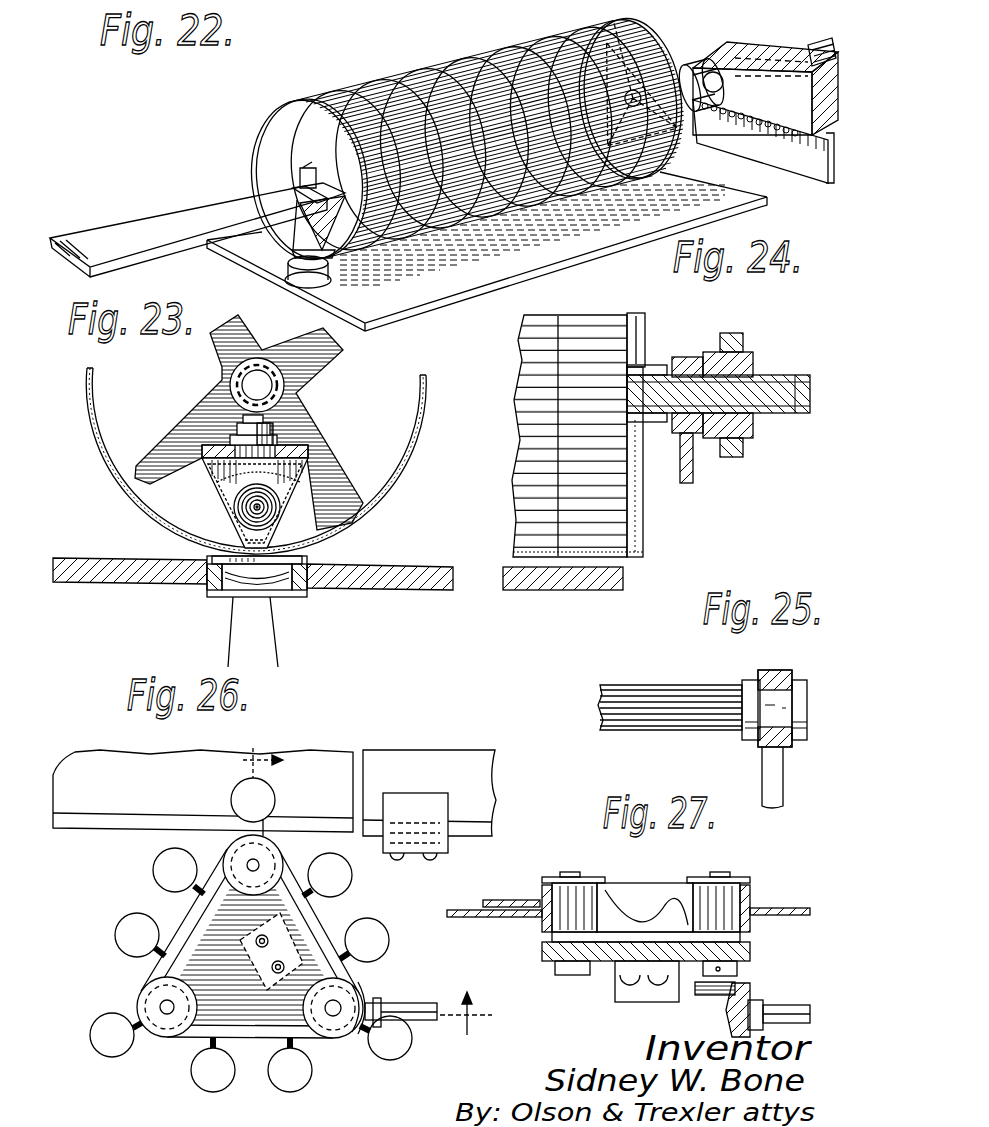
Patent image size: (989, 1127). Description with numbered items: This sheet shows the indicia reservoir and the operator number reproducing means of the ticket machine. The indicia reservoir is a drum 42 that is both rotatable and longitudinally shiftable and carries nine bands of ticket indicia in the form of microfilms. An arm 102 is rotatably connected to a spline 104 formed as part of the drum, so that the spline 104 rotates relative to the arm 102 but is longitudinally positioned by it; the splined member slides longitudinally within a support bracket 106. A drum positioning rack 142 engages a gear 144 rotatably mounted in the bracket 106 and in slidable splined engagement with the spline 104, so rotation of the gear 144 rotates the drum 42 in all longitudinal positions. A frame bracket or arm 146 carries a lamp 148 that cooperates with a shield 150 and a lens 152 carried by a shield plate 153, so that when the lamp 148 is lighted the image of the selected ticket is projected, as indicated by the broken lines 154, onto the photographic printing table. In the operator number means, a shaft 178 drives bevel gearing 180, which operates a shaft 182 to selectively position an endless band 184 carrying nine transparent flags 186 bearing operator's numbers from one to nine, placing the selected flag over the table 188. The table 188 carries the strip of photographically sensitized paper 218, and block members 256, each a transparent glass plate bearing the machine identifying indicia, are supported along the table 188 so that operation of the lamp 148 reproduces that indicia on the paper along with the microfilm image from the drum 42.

In FIG. 22, the drum 42 is at (357, 88).
In FIG. 23, the drum 42 is at (410, 468).
In FIG. 24, the drum 42 is at (645, 552).
In FIG. 25, the arm 102 is at (772, 776).
In FIG. 22, the spline 104 is at (817, 42).
In FIG. 23, the spline 104 is at (253, 385).
In FIG. 24, the spline 104 is at (792, 402).
In FIG. 25, the spline 104 is at (612, 688).
In FIG. 22, the support bracket 106 is at (740, 34).
In FIG. 24, the support bracket 106 is at (736, 341).
In FIG. 22, the drum positioning rack 142 is at (808, 166).
In FIG. 24, the drum positioning rack 142 is at (695, 470).
In FIG. 22, the gear 144 is at (692, 60).
In FIG. 24, the gear 144 is at (688, 364).
In FIG. 22, the frame bracket or arm 146 is at (132, 224).
In FIG. 23, the frame bracket or arm 146 is at (228, 452).
In FIG. 22, the lamp 148 is at (285, 255).
In FIG. 23, the lamp 148 is at (250, 492).
In FIG. 23, the shield 150 is at (237, 524).
In FIG. 23, the lens 152 is at (273, 598).
In FIG. 22, the shield plate 153 is at (450, 304).
In FIG. 23, the shield plate 153 is at (420, 586).
In FIG. 24, the shield plate 153 is at (587, 586).
In FIG. 23, the broken lines 154 is at (300, 646).
In FIG. 26, the shaft 178 is at (411, 1006).
In FIG. 27, the shaft 178 is at (789, 1004).
In FIG. 26, the bevel gearing 180 is at (356, 990).
In FIG. 27, the bevel gearing 180 is at (722, 992).
In FIG. 26, the shaft 182 is at (335, 1020).
In FIG. 27, the shaft 182 is at (728, 877).
In FIG. 26, the endless band 184 is at (196, 1034).
In FIG. 27, the endless band 184 is at (656, 885).
In FIG. 26, the flags 186 is at (127, 924).
In FIG. 27, the flags 186 is at (498, 900).
In FIG. 26, the table 188 is at (122, 829).
In FIG. 26, the photographically sensitized paper 218 is at (327, 766).
In FIG. 27, the photographically sensitized paper 218 is at (462, 912).
In FIG. 26, the block members 256 is at (413, 795).